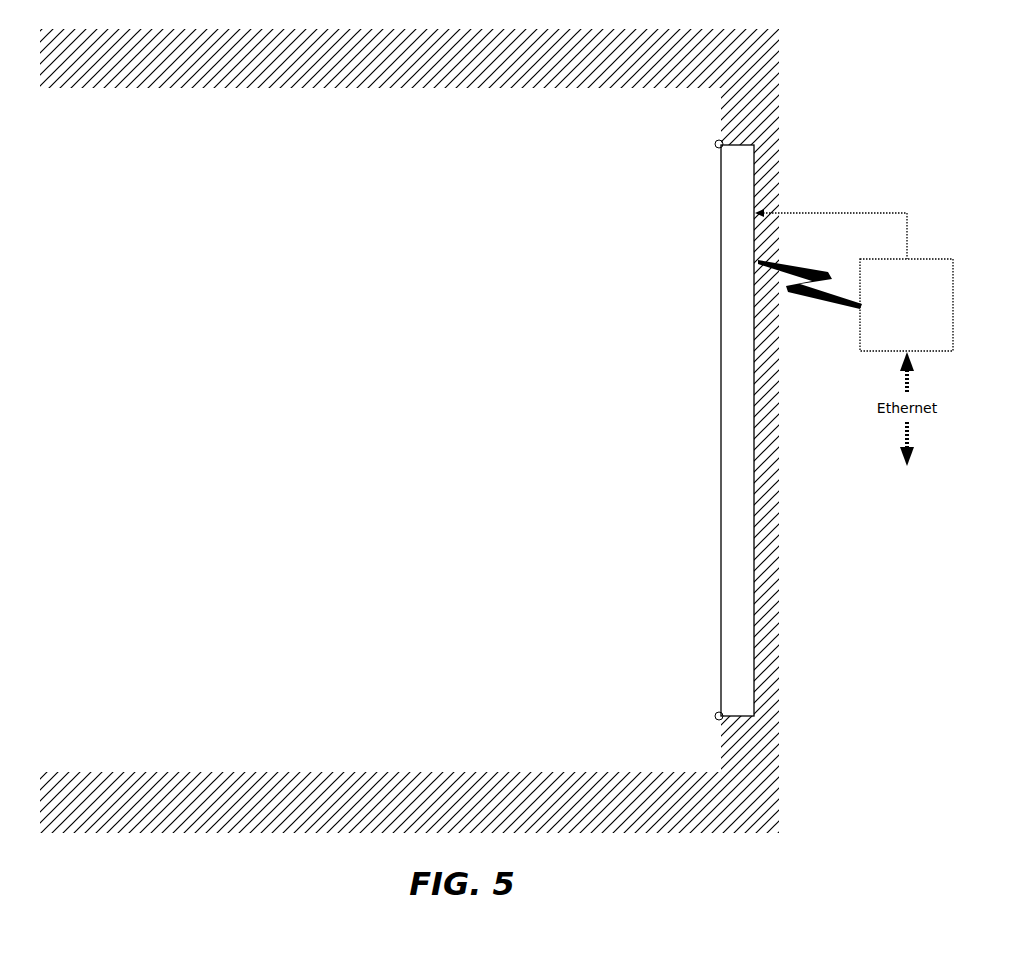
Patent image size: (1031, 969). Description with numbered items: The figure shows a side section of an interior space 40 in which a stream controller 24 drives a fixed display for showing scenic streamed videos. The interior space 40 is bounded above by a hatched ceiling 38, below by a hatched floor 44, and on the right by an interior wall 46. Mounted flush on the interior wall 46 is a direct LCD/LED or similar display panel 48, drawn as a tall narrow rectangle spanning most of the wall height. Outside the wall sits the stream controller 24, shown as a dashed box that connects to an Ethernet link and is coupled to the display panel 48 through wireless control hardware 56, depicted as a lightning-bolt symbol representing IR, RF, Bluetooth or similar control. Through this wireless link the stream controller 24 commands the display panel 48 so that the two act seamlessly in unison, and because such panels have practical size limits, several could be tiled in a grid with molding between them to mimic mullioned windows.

The stream controller 24 is at (955, 279).
The ceiling 38 is at (437, 88).
The interior space 40 is at (452, 302).
The floor 44 is at (438, 773).
The interior wall 46 is at (780, 128).
The display panel 48 is at (721, 603).
The wireless control hardware 56 is at (817, 301).